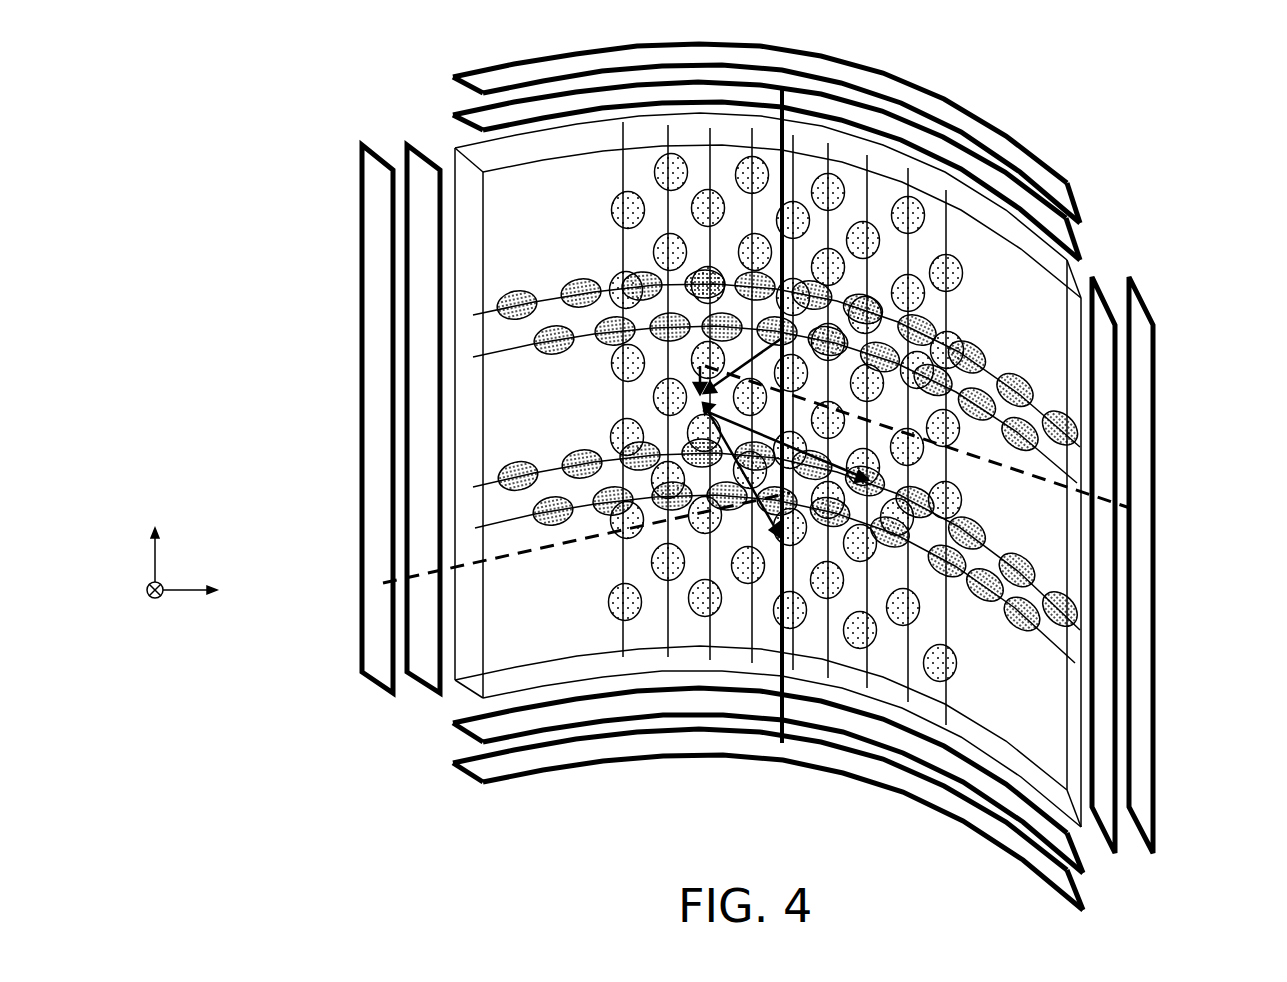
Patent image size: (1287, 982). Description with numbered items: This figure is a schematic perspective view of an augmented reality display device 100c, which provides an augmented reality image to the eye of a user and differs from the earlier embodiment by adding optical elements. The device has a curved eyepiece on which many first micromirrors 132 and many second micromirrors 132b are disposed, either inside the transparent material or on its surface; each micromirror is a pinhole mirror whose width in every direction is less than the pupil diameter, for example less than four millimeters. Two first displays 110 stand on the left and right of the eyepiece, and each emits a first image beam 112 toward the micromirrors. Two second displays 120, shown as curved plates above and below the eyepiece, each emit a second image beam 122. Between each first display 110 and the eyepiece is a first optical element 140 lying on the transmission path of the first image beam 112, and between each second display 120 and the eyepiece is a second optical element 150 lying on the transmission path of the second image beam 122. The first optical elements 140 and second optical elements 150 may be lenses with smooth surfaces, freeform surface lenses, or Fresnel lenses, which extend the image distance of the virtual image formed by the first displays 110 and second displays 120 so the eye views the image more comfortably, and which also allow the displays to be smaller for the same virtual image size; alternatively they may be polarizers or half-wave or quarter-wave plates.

The augmented reality display device 100c is at (705, 455).
The first display 110 is at (362, 358).
The first image beam 112 is at (1108, 503).
The second display 120 is at (838, 78).
The second image beam 122 is at (780, 100).
The first micromirror 132 is at (918, 208).
The second micromirror 132b is at (572, 455).
The first optical element 140 is at (405, 155).
The second optical element 150 is at (460, 106).